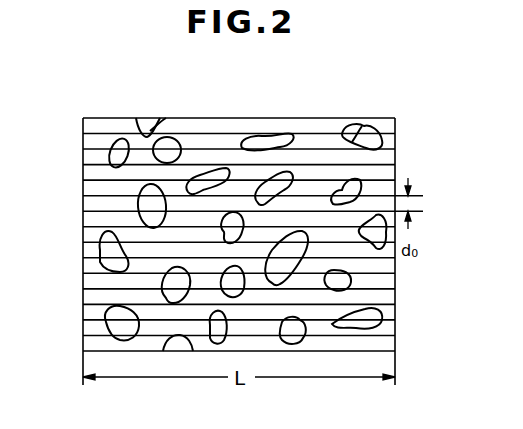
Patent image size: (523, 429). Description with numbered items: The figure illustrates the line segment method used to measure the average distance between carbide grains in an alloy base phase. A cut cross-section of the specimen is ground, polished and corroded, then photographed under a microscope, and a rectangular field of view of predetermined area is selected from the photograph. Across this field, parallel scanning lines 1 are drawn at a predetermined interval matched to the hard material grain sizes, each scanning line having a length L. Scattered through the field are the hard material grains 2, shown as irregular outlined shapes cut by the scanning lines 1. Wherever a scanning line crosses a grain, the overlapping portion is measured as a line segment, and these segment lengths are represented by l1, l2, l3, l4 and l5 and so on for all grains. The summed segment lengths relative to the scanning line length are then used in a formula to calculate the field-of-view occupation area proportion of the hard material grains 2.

The scanning lines 1 is at (100, 146).
The hard material grains 2 is at (100, 258).
The line segment length l1 is at (155, 126).
The line segment length l2 is at (288, 133).
The line segment length l3 is at (362, 125).
The line segment length l4 is at (122, 134).
The line segment length l5 is at (183, 143).